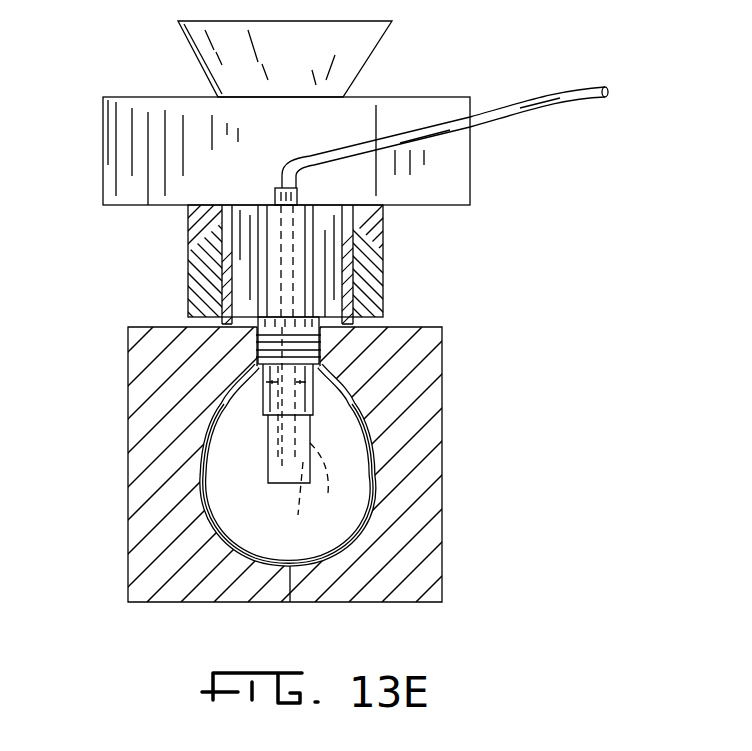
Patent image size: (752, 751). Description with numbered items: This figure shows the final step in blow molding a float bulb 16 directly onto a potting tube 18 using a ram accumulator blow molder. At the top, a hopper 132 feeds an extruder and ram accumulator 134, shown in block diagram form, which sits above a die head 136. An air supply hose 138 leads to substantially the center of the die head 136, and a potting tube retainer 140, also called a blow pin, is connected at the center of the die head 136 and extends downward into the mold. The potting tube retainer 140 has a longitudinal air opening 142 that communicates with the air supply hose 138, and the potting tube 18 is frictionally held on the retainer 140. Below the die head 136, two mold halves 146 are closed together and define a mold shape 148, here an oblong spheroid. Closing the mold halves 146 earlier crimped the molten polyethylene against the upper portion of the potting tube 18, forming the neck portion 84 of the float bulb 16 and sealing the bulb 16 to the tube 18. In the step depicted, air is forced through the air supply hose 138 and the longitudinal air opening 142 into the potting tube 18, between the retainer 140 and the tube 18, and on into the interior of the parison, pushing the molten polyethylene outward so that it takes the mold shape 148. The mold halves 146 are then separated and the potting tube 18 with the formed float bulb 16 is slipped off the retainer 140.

The hopper 132 is at (390, 38).
The extruder and ram accumulator 134 is at (478, 93).
The die head 136 is at (392, 255).
The air supply hose 138 is at (557, 100).
The neck portion 84 is at (322, 352).
The potting tube 18 is at (263, 465).
The potting tube retainer 140 is at (314, 502).
The longitudinal air opening 142 is at (338, 475).
The mold halves 146 is at (128, 435).
The mold shape 148 is at (207, 520).
The float bulb 16 is at (375, 470).